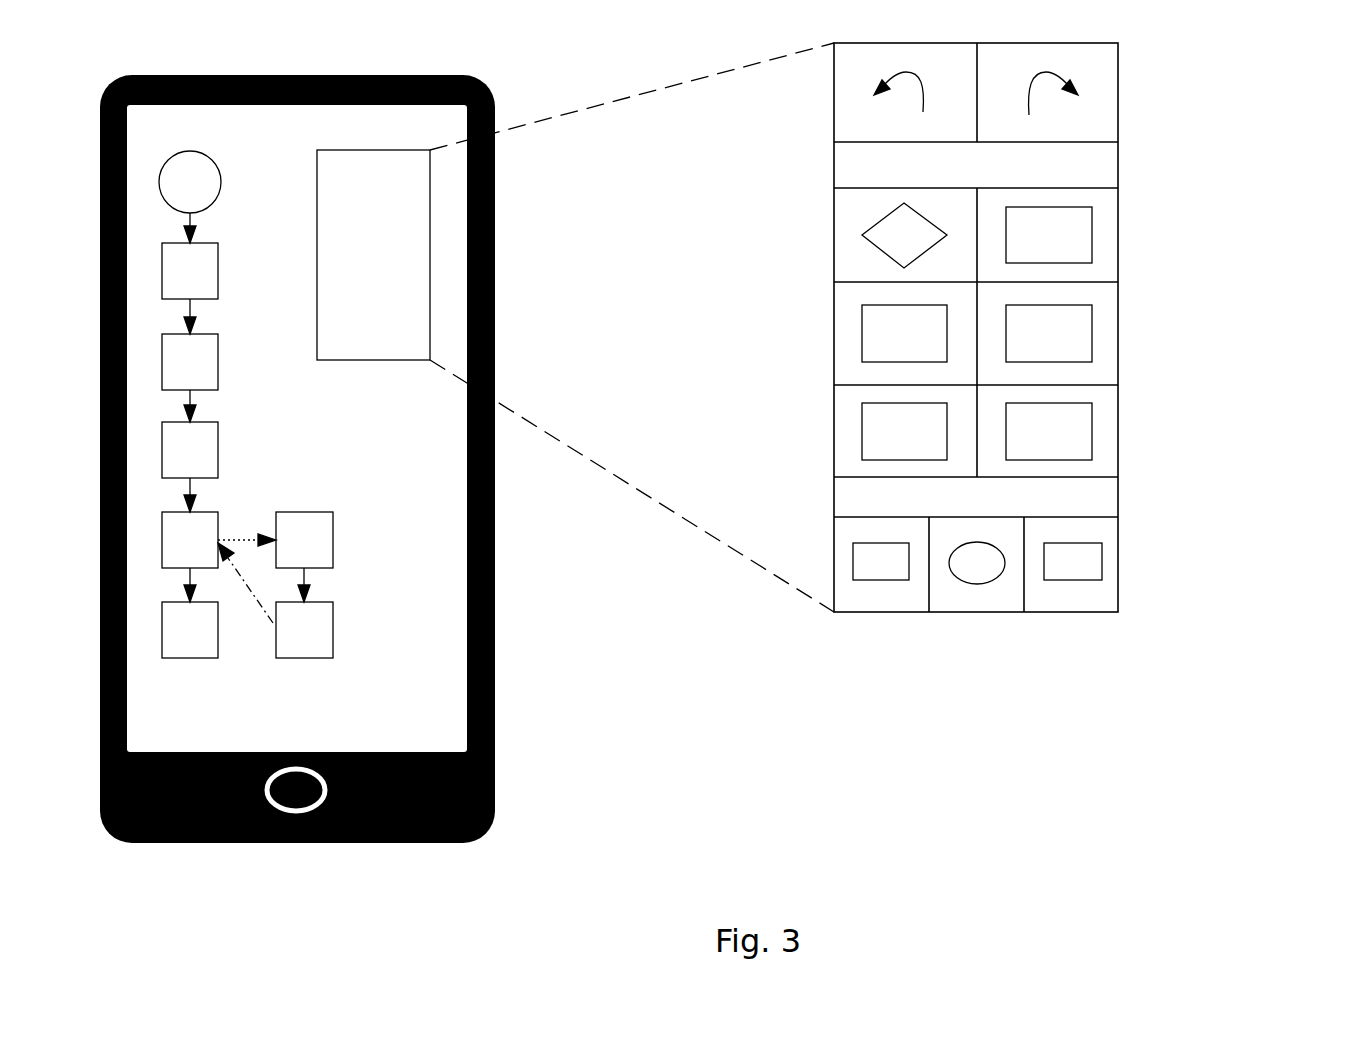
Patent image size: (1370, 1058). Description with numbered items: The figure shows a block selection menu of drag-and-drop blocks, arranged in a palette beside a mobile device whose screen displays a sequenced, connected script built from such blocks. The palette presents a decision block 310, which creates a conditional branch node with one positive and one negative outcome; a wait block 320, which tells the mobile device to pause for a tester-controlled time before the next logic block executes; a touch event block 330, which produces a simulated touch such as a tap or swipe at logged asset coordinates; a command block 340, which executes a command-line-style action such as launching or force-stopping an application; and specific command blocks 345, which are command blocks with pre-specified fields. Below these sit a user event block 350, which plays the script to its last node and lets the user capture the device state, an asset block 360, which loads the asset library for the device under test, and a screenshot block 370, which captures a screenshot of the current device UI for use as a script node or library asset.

The decision block 310 is at (882, 253).
The wait block 320 is at (1092, 240).
The touch event block 330 is at (862, 333).
The command block 340 is at (1092, 333).
The specific command blocks 345 is at (947, 428).
The user event block 350 is at (853, 563).
The asset block 360 is at (977, 584).
The screenshot block 370 is at (1102, 562).